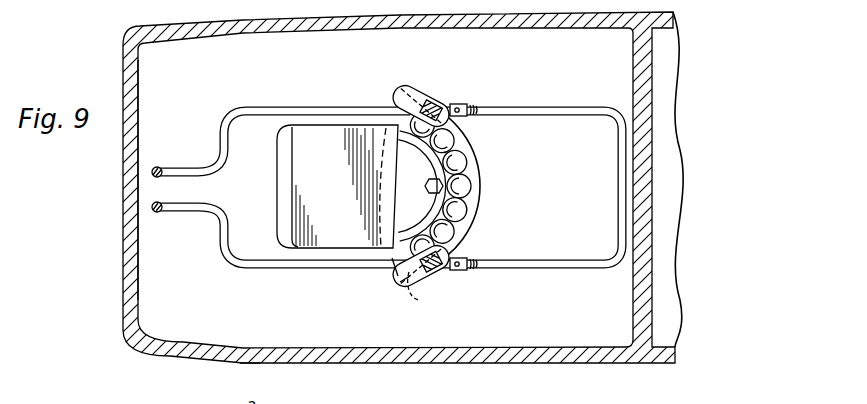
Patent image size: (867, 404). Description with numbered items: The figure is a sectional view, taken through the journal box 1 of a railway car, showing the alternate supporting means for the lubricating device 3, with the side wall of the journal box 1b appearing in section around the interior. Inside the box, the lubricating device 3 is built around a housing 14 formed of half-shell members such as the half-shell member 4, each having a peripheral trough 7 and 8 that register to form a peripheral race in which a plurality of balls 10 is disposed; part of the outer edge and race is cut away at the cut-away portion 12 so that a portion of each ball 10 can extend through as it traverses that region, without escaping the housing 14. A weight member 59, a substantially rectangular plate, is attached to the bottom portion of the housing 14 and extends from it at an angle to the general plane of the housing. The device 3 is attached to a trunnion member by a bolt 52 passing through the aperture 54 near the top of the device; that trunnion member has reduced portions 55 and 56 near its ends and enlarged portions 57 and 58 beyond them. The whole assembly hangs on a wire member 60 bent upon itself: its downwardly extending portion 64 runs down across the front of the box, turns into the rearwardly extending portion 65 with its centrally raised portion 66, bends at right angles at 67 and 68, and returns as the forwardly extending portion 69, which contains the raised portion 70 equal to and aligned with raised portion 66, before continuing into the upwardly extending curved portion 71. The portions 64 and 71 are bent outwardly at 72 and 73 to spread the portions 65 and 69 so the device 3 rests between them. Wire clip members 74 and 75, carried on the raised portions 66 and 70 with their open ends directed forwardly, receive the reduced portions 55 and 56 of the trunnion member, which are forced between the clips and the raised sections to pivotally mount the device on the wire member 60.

The journal box 1 is at (536, 362).
The housing side wall 1b is at (123, 232).
The lubricating device 3 is at (436, 195).
The half-shell member 4 is at (429, 218).
The peripheral trough 7 is at (391, 274).
The peripheral trough 8 is at (403, 282).
The balls 10 is at (466, 219).
The cut-away portion 12 is at (455, 234).
The housing 14 is at (412, 285).
The bolt 52 is at (430, 184).
The aperture 54 is at (464, 184).
The reduced portion 55 is at (411, 94).
The reduced portion 56 is at (416, 296).
The enlarged portion 57 is at (433, 96).
The enlarged portion 58 is at (436, 280).
The weight member 59 is at (292, 186).
The wire member 60 is at (262, 274).
The downwardly extending portion 64 is at (162, 211).
The rearwardly extending portion 65 is at (551, 269).
The raised portion 66 is at (476, 271).
The right-angle bend 67 is at (612, 256).
The right-angle bend 68 is at (606, 118).
The forwardly extending portion 69 is at (316, 108).
The raised portion 70 is at (456, 104).
The upwardly extending curved portion 71 is at (160, 169).
The outward bend 72 is at (221, 236).
The outward bend 73 is at (226, 145).
The wire clip member 74 is at (455, 271).
The wire clip member 75 is at (474, 105).